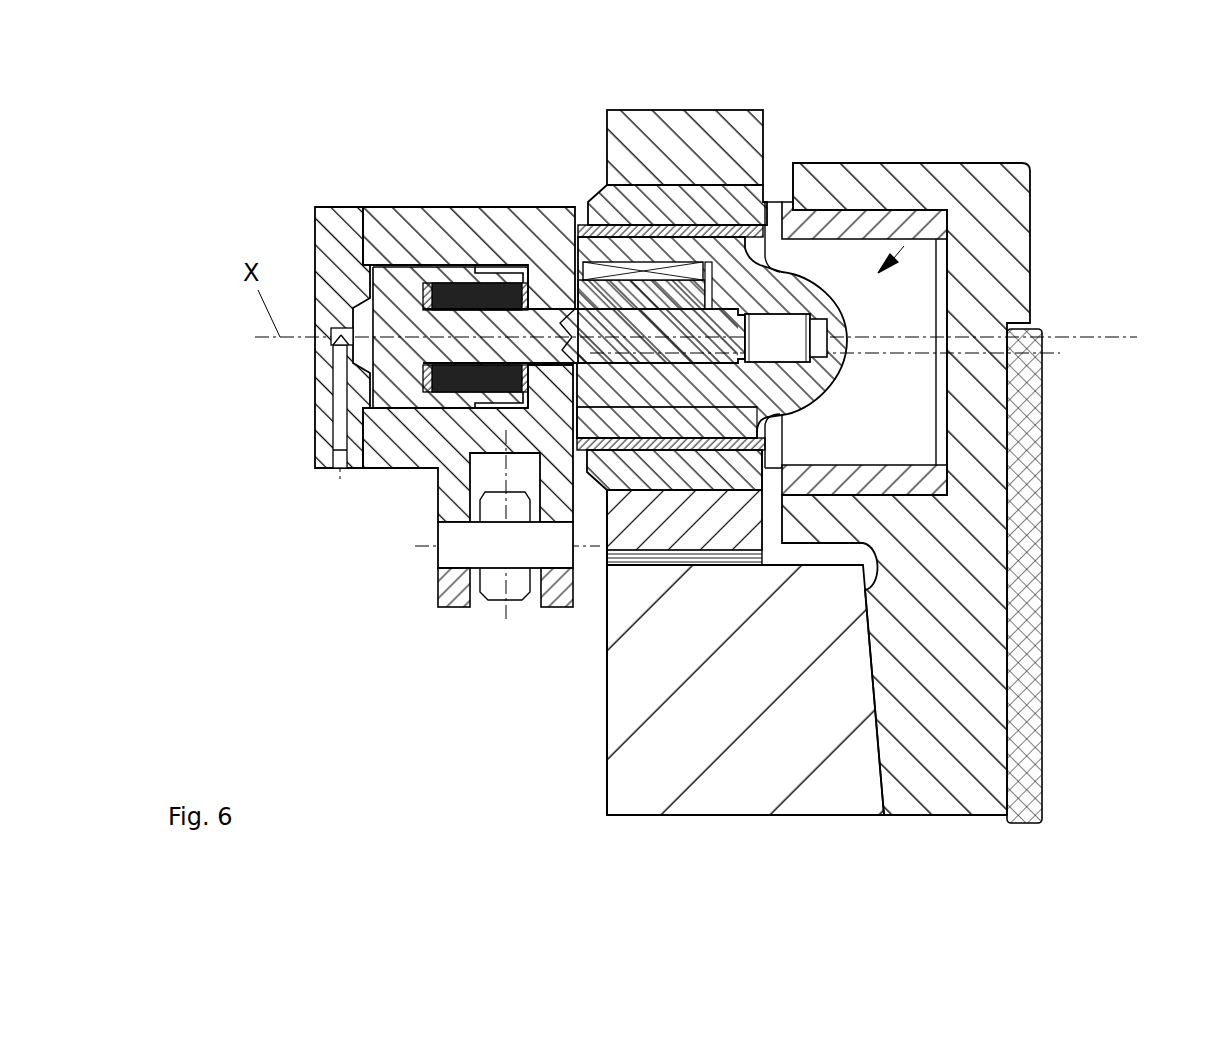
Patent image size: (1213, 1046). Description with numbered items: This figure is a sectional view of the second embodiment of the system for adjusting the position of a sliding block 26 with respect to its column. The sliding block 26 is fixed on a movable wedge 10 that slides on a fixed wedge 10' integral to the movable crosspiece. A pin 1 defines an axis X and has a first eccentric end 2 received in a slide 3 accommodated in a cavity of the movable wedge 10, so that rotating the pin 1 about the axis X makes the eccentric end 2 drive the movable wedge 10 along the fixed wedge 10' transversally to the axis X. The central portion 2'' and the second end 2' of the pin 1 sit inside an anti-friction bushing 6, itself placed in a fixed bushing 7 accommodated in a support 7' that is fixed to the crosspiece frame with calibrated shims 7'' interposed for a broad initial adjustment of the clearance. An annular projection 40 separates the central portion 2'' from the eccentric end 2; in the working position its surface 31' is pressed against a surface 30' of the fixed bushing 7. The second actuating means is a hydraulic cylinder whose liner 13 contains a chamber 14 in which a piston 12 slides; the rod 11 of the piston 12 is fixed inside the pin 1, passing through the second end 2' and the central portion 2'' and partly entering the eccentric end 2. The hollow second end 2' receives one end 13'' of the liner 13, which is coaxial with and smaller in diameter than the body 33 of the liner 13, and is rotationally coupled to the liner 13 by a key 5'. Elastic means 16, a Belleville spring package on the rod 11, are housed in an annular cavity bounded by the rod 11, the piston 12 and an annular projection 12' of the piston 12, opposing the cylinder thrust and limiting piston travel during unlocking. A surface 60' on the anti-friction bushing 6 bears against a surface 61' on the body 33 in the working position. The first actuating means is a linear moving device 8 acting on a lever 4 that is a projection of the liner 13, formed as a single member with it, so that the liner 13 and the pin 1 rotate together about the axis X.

The pin 1 is at (950, 207).
The first eccentric end 2 is at (982, 328).
The second end 2' is at (575, 584).
The central portion 2'' is at (712, 240).
The slide 3 is at (897, 213).
The lever 4 is at (448, 507).
The key 5' is at (643, 161).
The anti-friction bushing 6 is at (680, 300).
The fixed bushing 7 is at (685, 108).
The support 7' is at (684, 695).
The calibrated shims 7'' is at (637, 686).
The moving device 8 is at (443, 608).
The movable wedge 10 is at (879, 652).
The fixed wedge 10' is at (705, 747).
The rod 11 is at (580, 323).
The piston 12 is at (463, 281).
The annular projection 12' is at (468, 267).
The liner 13 is at (444, 386).
The end of the liner 13'' is at (671, 238).
The chamber 14 is at (360, 352).
The elastic means 16 is at (462, 290).
The sliding block 26 is at (1024, 513).
The surface of the fixed bushing 30' is at (624, 576).
The surface of the annular projection 31' is at (948, 476).
The body of the liner 33 is at (403, 233).
The annular projection 40 is at (767, 252).
The surface of the anti-friction bushing 60' is at (672, 138).
The surface of the liner body 61' is at (645, 153).